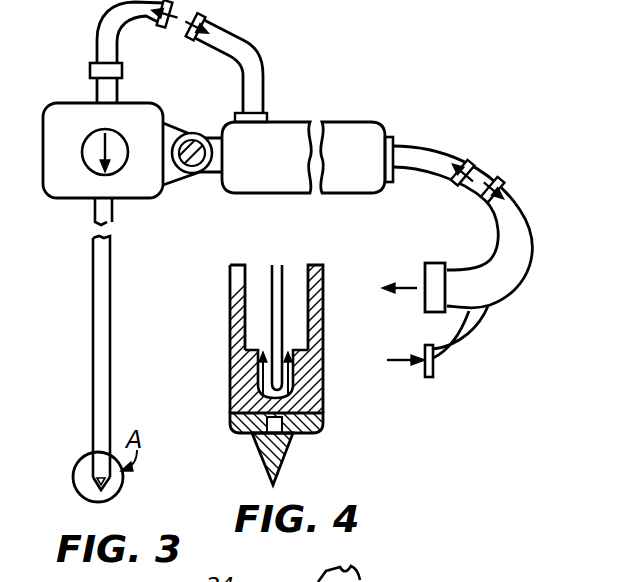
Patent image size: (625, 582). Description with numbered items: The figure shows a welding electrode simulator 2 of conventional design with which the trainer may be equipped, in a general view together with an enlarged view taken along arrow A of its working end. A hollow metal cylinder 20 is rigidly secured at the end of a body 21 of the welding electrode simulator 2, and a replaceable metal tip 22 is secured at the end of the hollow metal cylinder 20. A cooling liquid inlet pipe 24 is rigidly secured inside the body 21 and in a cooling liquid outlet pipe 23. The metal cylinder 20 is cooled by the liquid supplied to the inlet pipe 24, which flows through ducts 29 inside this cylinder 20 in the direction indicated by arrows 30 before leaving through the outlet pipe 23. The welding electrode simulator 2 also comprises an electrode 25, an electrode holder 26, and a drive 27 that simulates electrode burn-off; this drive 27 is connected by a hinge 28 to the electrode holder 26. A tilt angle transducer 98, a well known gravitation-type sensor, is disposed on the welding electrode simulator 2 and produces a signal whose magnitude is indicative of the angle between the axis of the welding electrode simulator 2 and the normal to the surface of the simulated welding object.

In FIG. 4, the hollow metal cylinder 20 is at (303, 363).
In FIG. 4, the body 21 is at (317, 325).
In FIG. 4, the replaceable metal tip 22 is at (283, 446).
In FIG. 3, the cooling liquid outlet pipe 23 is at (433, 266).
In FIG. 3, the cooling liquid inlet pipe 24 is at (426, 343).
In FIG. 4, the cooling liquid inlet pipe 24 is at (278, 293).
In FIG. 3, the electrode 25 is at (103, 328).
In FIG. 3, the electrode holder 26 is at (348, 130).
In FIG. 3, the drive simulating electrode burn-off 27 is at (135, 115).
In FIG. 3, the hinge 28 is at (190, 136).
In FIG. 4, the ducts 29 is at (253, 358).
In FIG. 3, the arrows 30 is at (405, 286).
In FIG. 4, the arrows 30 is at (255, 387).
In FIG. 3, the tilt angle transducer 98 is at (117, 163).
In FIG. 4, the welding electrode simulator 2 is at (358, 558).